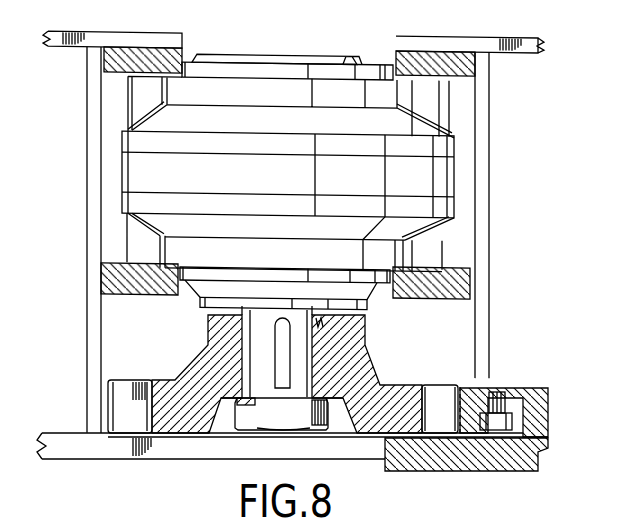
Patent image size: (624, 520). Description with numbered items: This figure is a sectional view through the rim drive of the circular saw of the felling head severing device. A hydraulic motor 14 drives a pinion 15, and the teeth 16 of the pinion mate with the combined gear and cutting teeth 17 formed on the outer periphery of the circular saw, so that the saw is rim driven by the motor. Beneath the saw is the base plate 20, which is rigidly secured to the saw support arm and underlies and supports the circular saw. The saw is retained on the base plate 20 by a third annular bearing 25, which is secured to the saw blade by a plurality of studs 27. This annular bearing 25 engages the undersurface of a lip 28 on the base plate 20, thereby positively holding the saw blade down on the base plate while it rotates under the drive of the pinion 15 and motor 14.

The hydraulic motor 14 is at (422, 178).
The pinion 15 is at (353, 338).
The teeth of the pinion 16 is at (131, 380).
The combined gear and cutting teeth 17 is at (435, 386).
The base plate 20 is at (525, 472).
The third annular bearing 25 is at (512, 417).
The studs 27 is at (494, 392).
The lip 28 is at (532, 389).